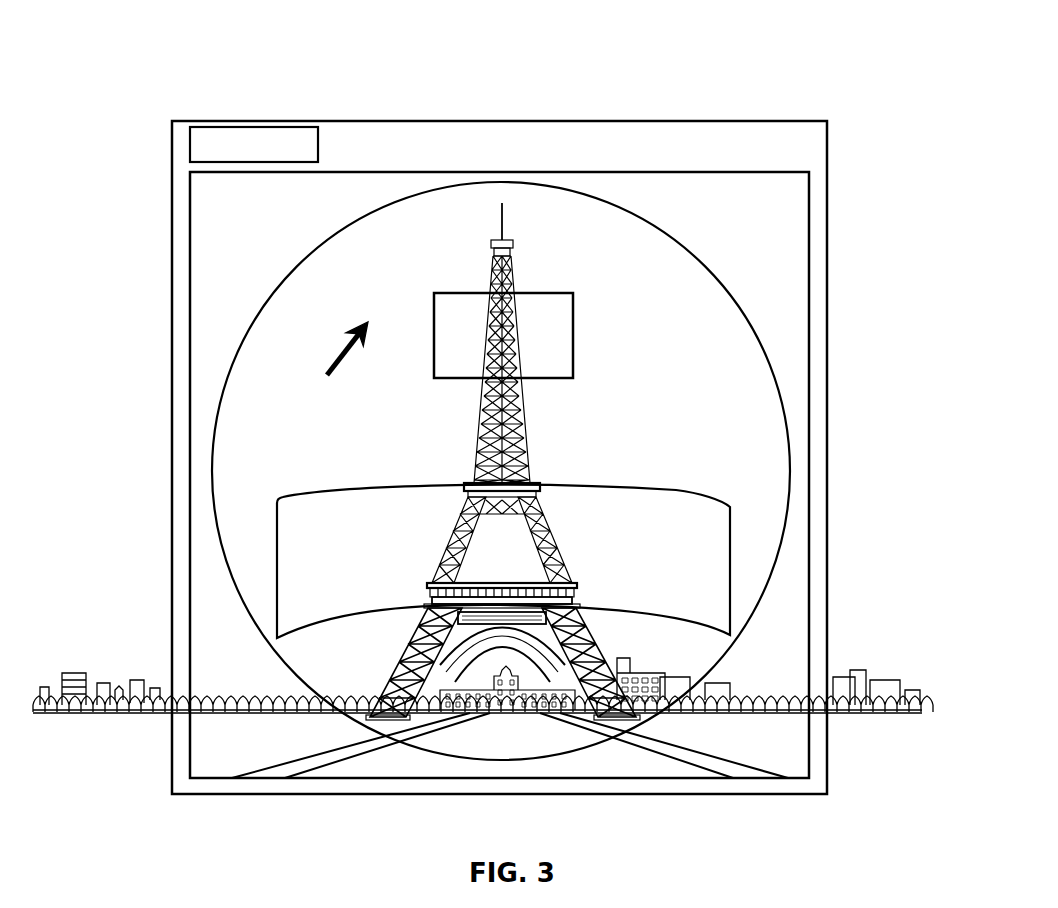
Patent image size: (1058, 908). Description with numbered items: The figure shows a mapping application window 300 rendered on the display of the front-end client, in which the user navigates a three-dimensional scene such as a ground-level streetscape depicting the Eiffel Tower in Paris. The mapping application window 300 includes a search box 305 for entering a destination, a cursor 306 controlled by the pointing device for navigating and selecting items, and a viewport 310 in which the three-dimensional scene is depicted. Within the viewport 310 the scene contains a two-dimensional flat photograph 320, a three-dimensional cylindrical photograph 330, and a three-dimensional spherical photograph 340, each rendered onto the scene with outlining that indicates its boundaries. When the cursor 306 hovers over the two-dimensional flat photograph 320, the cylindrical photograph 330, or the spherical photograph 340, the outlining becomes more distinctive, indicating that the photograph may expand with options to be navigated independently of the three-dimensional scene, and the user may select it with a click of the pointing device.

The mapping application window 300 is at (823, 72).
The search box 305 is at (190, 143).
The cursor 306 is at (345, 335).
The viewport 310 is at (740, 172).
The two-dimensional flat photograph 320 is at (574, 300).
The three-dimensional cylindrical photograph 330 is at (676, 490).
The three-dimensional spherical photograph 340 is at (745, 313).